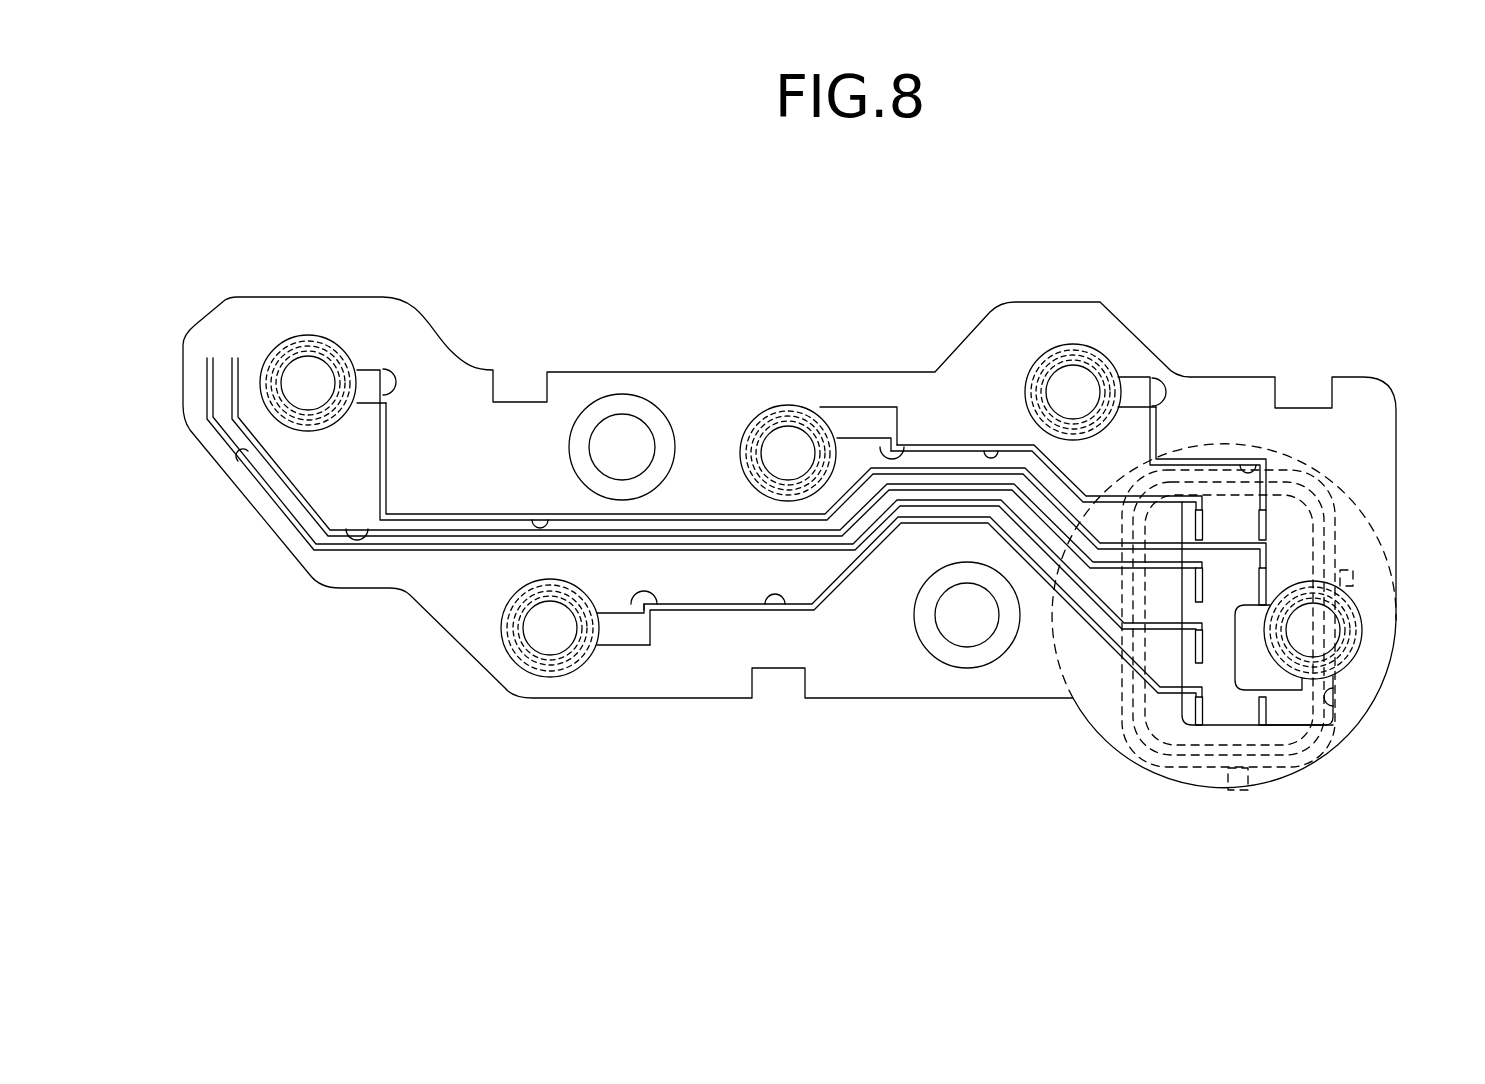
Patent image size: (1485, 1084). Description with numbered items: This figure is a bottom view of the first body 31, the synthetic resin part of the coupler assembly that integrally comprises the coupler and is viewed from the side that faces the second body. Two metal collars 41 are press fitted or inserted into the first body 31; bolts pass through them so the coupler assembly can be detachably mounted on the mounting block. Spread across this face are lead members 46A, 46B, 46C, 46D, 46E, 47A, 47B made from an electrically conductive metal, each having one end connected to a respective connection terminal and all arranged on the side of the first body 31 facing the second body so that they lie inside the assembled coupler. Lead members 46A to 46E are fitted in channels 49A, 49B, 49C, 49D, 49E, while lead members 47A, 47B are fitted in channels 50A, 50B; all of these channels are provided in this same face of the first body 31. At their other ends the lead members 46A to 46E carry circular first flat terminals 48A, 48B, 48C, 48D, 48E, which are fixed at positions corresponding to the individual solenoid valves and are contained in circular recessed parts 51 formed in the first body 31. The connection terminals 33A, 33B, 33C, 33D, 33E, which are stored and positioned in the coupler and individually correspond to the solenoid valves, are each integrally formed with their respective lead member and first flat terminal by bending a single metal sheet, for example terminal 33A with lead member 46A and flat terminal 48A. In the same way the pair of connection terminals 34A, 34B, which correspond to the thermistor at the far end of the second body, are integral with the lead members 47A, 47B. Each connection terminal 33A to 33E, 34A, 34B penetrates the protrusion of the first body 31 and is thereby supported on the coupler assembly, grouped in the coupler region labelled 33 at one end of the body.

The first body 31 is at (700, 398).
The collar 41 is at (621, 400).
The lead member 46A is at (438, 515).
The lead member 46B is at (714, 606).
The lead member 46C is at (935, 447).
The lead member 46D is at (1160, 426).
The lead member 46E is at (1292, 708).
The lead member 47A is at (283, 487).
The lead member 47B is at (463, 552).
The first flat terminal 48A is at (318, 334).
The first flat terminal 48B is at (517, 676).
The first flat terminal 48C is at (787, 404).
The first flat terminal 48D is at (1053, 345).
The first flat terminal 48E is at (1365, 613).
The channel 49A is at (538, 526).
The channel 49B is at (782, 612).
The channel 49C is at (988, 444).
The channel 49D is at (1270, 476).
The channel 49E is at (1334, 705).
The channel 50A is at (356, 530).
The channel 50B is at (242, 462).
The recessed part 51 is at (298, 360).
The connector 33 is at (1237, 630).
The connection terminal 33A is at (1263, 582).
The connection terminal 33B is at (1197, 713).
The connection terminal 33C is at (1207, 523).
The connection terminal 33D is at (1263, 523).
The connection terminal 33E is at (1263, 713).
The connection terminal 34A is at (1197, 590).
The connection terminal 34B is at (1197, 657).